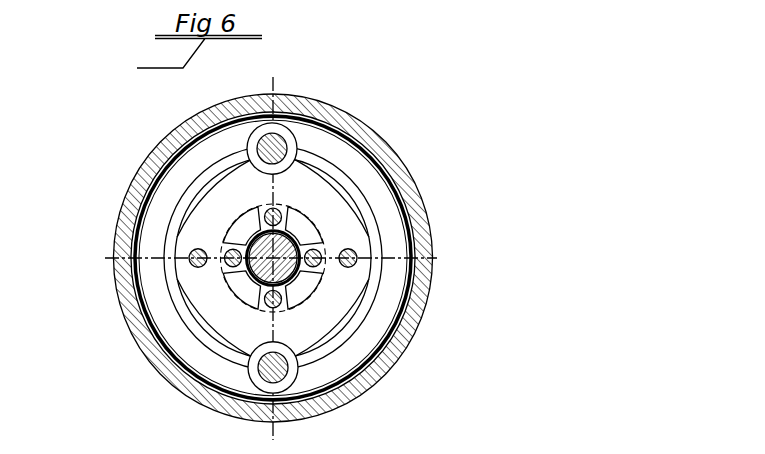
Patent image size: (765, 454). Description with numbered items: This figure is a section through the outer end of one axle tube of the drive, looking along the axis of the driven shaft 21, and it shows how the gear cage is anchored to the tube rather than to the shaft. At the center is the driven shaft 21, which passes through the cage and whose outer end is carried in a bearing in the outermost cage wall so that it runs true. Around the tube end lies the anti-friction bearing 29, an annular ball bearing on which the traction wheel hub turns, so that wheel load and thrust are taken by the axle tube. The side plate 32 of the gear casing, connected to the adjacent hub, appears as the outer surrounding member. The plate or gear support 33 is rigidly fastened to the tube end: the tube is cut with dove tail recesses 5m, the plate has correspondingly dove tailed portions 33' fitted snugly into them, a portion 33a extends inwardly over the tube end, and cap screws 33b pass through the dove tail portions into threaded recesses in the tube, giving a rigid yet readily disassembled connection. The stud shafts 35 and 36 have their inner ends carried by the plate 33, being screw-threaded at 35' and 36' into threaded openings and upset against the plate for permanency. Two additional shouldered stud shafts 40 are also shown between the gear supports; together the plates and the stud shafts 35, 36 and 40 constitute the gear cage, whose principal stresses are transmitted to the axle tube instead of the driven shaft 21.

The driven shaft 21 is at (262, 270).
The anti-friction bearing 29 is at (353, 203).
The side plate 32 is at (163, 148).
The plate or gear support 33 is at (368, 326).
The dove tailed portion of plate 33' is at (201, 223).
The inwardly extending portion of plate 33a is at (252, 240).
The cap screws 33b is at (232, 246).
The stud shaft 35 is at (312, 129).
The screw-threaded inner end of stud shaft 35' is at (294, 110).
The stud shaft 36 is at (310, 392).
The screw-threaded inner end of stud shaft 36' is at (293, 403).
The stud shafts 40 is at (190, 259).
The dove tail recesses 5m is at (282, 203).